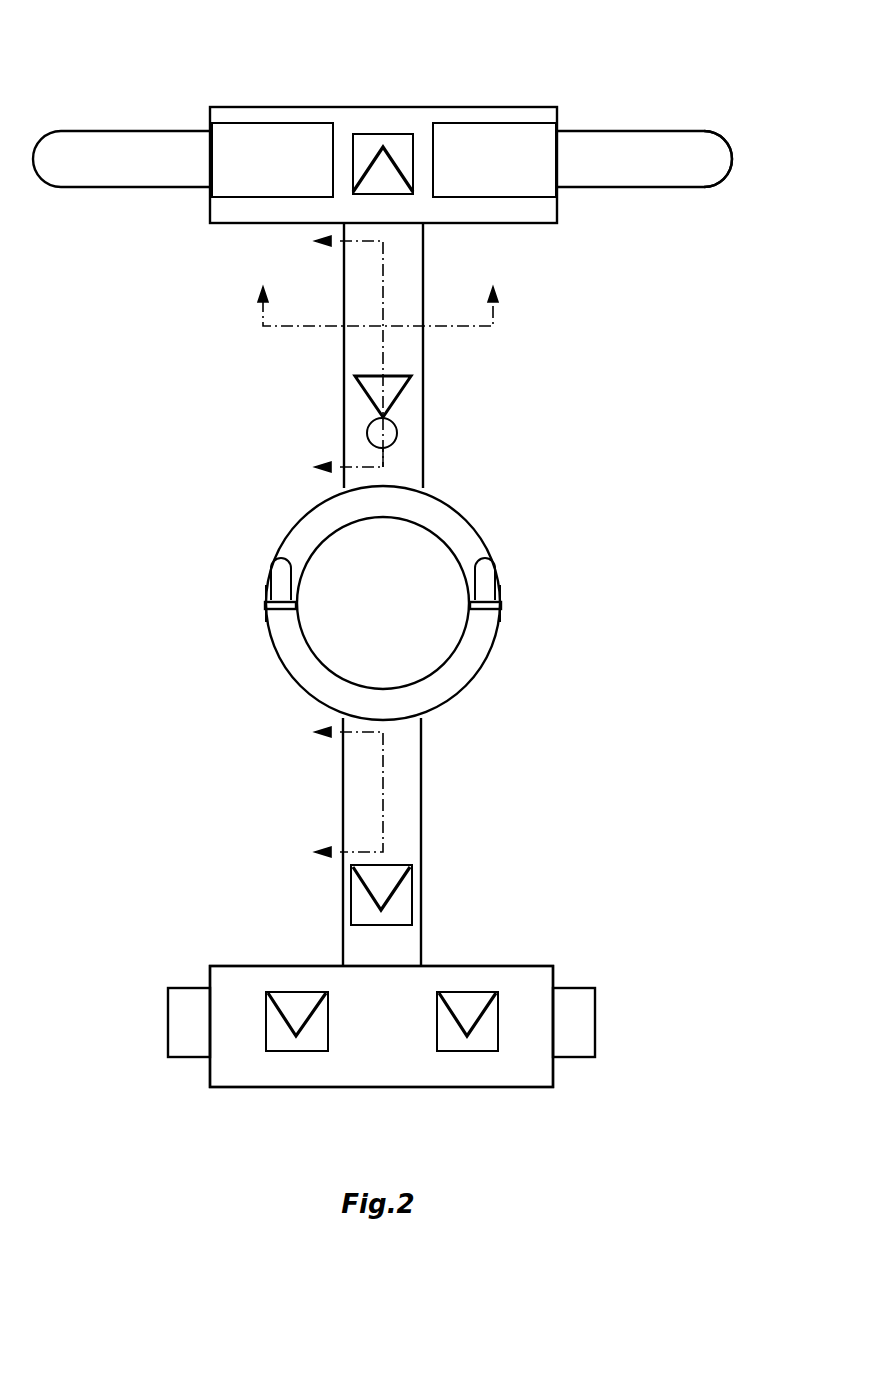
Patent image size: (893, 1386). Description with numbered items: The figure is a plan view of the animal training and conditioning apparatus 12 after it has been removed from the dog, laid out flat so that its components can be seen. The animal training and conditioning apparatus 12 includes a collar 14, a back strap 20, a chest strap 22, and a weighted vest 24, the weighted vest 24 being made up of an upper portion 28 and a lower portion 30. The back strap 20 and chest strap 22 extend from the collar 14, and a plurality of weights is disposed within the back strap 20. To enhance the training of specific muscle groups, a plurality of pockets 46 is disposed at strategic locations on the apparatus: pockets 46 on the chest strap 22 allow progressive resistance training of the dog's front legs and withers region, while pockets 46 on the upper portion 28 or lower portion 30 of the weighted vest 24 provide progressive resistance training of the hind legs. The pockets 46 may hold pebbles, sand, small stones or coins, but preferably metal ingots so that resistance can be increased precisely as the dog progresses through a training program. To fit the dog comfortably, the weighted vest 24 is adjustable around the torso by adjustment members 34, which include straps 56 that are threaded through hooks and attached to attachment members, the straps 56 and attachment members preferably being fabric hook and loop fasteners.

The animal training and conditioning apparatus 12 is at (593, 453).
The collar 14 is at (465, 665).
The back strap 20 is at (408, 362).
The chest strap 22 is at (408, 735).
The weighted vest 24 is at (470, 107).
The upper portion 28 is at (258, 107).
The lower portion 30 is at (492, 1075).
The adjustment members 34 is at (130, 150).
The pockets 46 is at (378, 138).
The straps 56 is at (692, 177).